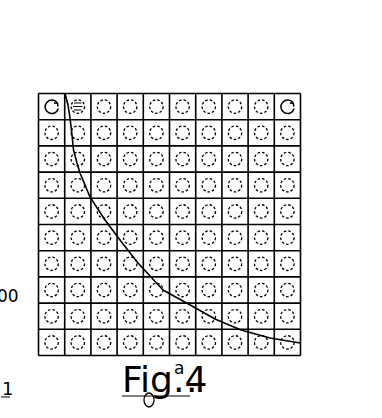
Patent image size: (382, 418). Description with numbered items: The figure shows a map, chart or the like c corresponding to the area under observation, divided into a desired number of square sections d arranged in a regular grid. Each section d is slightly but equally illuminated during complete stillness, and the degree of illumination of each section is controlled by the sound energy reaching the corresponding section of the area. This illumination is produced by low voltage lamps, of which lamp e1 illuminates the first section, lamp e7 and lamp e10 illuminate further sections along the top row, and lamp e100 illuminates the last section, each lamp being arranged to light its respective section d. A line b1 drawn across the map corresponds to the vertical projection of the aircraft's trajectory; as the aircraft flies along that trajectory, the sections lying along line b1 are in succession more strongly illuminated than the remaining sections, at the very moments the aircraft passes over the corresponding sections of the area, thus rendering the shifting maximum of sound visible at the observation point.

The square section d is at (244, 97).
The map c is at (277, 96).
The low voltage lamp e1 is at (57, 96).
The low voltage lamp e7 is at (78, 99).
The low voltage lamp e10 is at (298, 90).
The low voltage lamp e100 is at (285, 346).
The line b1 is at (76, 159).